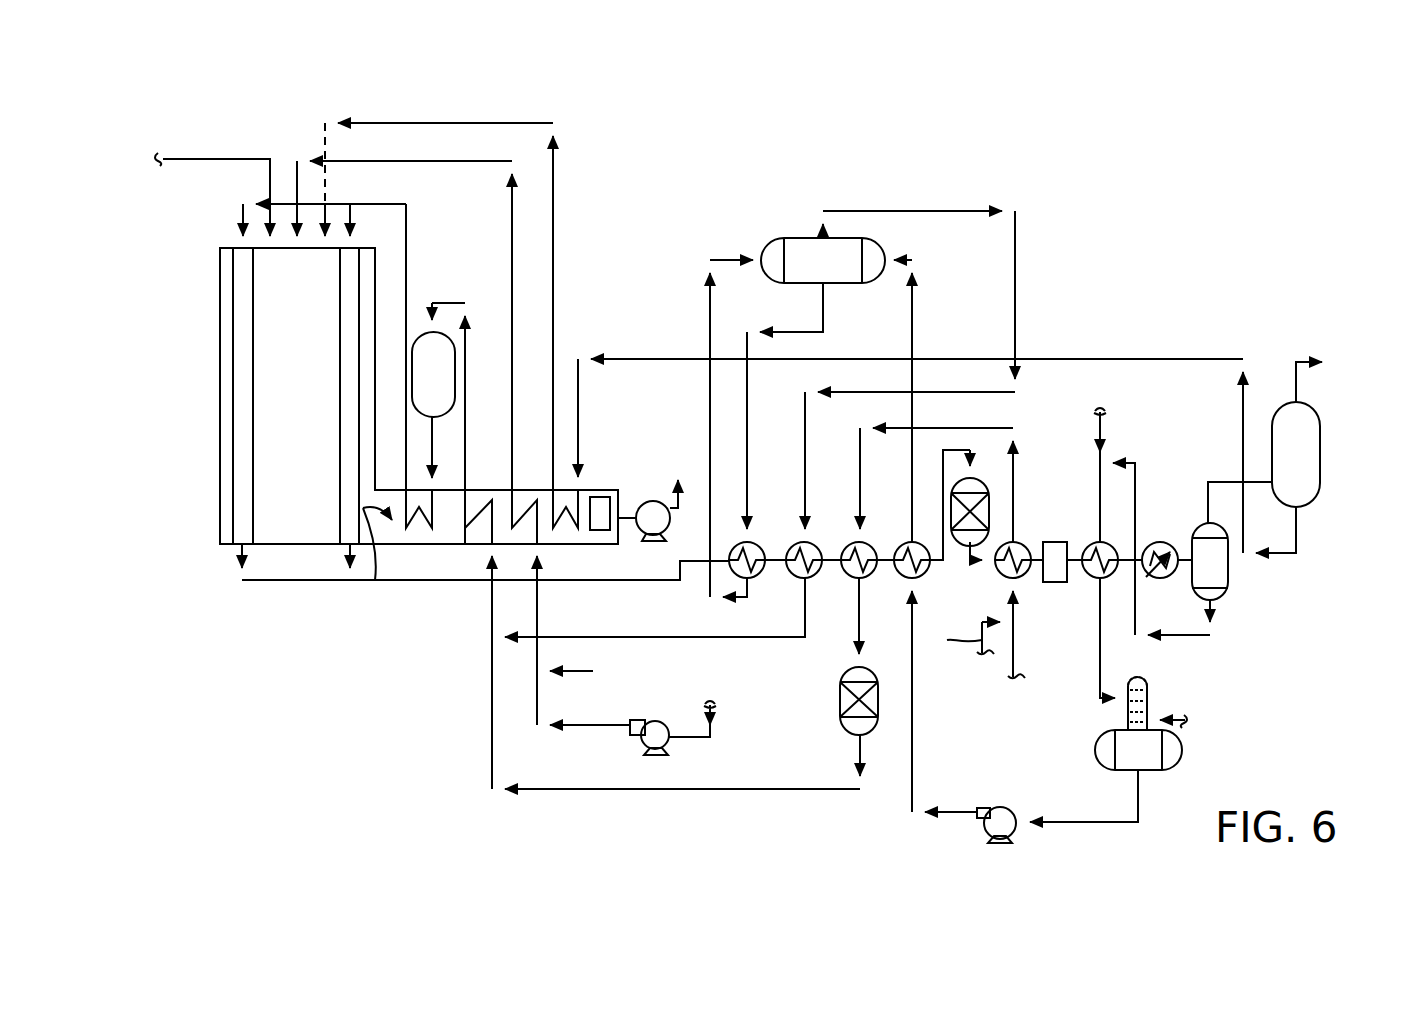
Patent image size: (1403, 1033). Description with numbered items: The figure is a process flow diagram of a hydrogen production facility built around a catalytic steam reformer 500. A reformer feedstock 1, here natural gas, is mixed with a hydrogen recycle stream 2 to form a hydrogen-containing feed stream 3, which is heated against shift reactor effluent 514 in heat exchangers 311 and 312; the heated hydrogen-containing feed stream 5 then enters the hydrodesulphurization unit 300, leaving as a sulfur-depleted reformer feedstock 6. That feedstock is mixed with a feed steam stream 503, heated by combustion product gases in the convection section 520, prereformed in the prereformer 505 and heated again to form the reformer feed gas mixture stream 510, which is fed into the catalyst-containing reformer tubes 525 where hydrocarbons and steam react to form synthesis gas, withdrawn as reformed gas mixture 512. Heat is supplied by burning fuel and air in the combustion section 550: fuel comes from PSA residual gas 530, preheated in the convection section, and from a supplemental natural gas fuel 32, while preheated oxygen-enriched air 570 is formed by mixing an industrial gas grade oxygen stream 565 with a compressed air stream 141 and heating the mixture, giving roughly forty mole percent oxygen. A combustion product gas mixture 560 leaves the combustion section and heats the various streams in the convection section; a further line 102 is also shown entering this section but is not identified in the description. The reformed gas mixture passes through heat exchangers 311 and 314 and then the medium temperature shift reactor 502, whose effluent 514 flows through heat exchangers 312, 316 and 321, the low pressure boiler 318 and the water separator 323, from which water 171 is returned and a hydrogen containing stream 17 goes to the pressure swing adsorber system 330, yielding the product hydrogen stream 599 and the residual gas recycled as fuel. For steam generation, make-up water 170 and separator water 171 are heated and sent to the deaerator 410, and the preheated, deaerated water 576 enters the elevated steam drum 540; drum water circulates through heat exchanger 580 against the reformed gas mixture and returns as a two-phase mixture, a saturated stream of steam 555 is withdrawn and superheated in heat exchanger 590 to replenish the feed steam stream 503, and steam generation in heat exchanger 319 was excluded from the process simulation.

The reformer feedstock 1 is at (1015, 655).
The hydrogen recycle stream 2 is at (956, 636).
The hydrogen-containing feed stream 3 is at (1015, 608).
The heated hydrogen-containing feed stream 5 is at (859, 617).
The sulfur-depleted reformer feedstock 6 is at (616, 789).
The hydrogen containing stream 17 is at (1218, 482).
The supplemental fuel 32 is at (254, 159).
The feed line to burner 102 is at (538, 565).
The compressed air stream 141 is at (565, 725).
The make-up water 170 is at (1102, 425).
The water from water separator 171 is at (1168, 637).
The hydrodesulphurization unit 300 is at (840, 712).
The heat exchanger 311 is at (870, 577).
The heat exchanger 312 is at (1022, 544).
The heat exchanger 314 is at (895, 550).
The heat exchanger 316 is at (1090, 545).
The low pressure boiler 318 is at (1050, 582).
The heat exchanger 319 is at (600, 497).
The heat exchanger 321 is at (1160, 542).
The water separator 323 is at (1230, 575).
The pressure swing adsorber system 330 is at (1322, 490).
The deaerator 410 is at (1178, 752).
The reformer 500 is at (222, 310).
The shift reactor 502 is at (989, 490).
The feed steam stream 503 is at (680, 637).
The prereformer 505 is at (452, 382).
The reformer feed gas mixture stream 510 is at (408, 228).
The reformed gas mixture 512 is at (437, 580).
The shift reactor effluent stream 514 is at (971, 562).
The convection section 520 is at (496, 490).
The catalyst-containing reformer tubes 525 is at (234, 386).
The PSA residual gas 530 is at (518, 123).
The steam drum 540 is at (842, 270).
The combustion section 550 is at (317, 339).
The saturated stream of steam 555 is at (915, 211).
The combustion product gas mixture 560 is at (376, 584).
The industrial gas grade oxygen stream 565 is at (560, 670).
The preheated oxygen-enriched air 570 is at (492, 161).
The preheated and deaerated water 576 is at (913, 320).
The heat exchanger 580 is at (762, 545).
The heat exchanger 590 is at (818, 545).
The product hydrogen stream 599 is at (1298, 388).